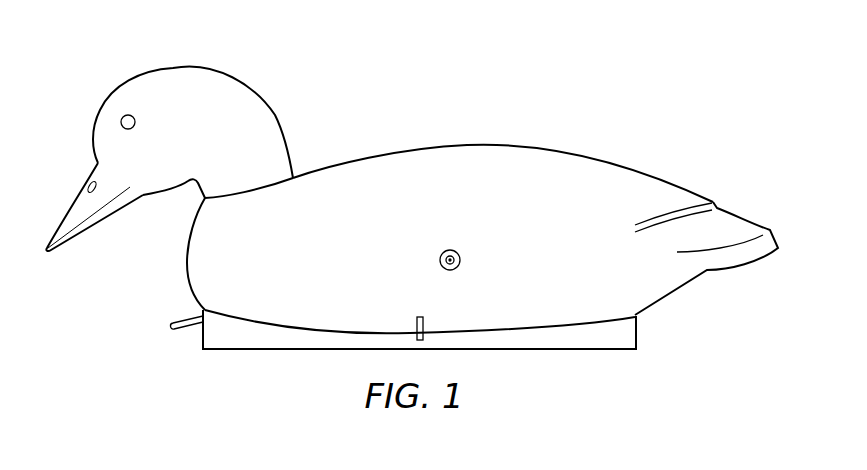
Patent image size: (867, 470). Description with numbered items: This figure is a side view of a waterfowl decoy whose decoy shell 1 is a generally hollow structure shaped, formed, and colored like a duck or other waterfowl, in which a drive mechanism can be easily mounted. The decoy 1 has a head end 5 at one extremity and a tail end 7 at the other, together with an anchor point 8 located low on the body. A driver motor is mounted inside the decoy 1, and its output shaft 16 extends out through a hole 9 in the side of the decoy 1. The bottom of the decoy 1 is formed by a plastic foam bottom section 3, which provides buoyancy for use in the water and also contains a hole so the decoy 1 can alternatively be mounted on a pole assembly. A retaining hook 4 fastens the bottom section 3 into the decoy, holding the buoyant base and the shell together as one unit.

The decoy shell 1 is at (447, 98).
The plastic foam bottom section 3 is at (636, 332).
The retaining hook 4 is at (417, 323).
The head end 5 is at (158, 68).
The tail end 7 is at (758, 257).
The anchor point 8 is at (178, 333).
The hole 9 is at (461, 258).
The output shaft 16 is at (445, 251).